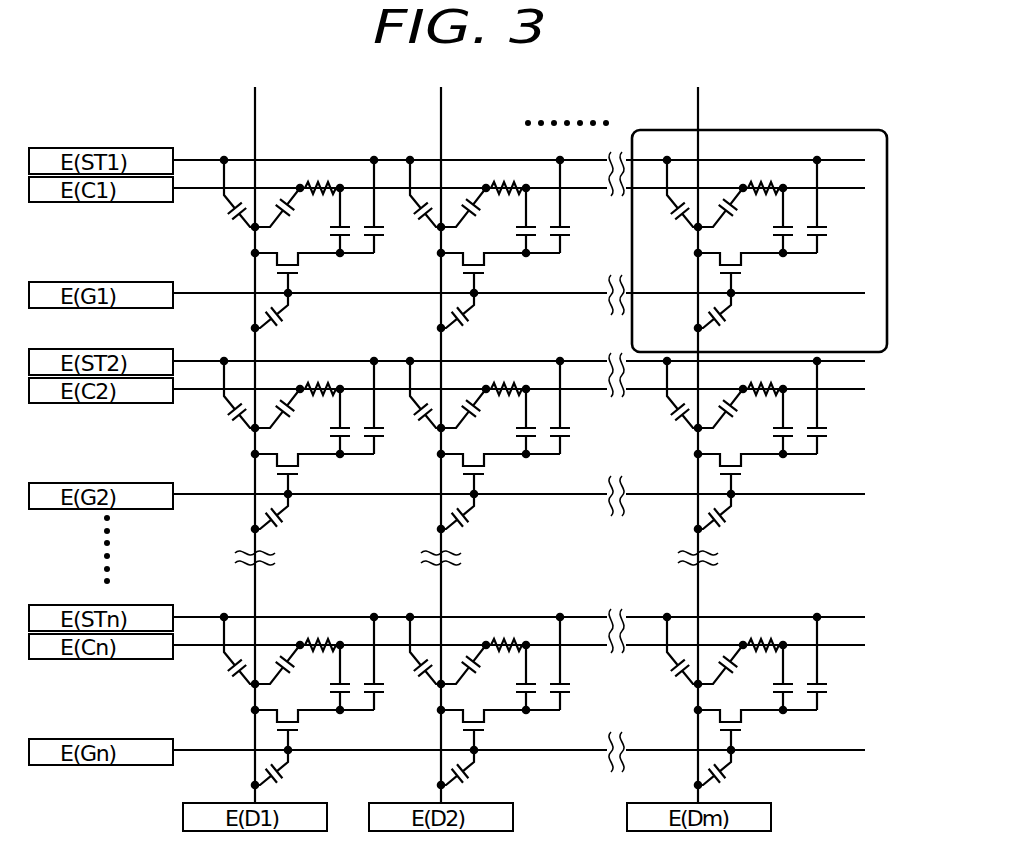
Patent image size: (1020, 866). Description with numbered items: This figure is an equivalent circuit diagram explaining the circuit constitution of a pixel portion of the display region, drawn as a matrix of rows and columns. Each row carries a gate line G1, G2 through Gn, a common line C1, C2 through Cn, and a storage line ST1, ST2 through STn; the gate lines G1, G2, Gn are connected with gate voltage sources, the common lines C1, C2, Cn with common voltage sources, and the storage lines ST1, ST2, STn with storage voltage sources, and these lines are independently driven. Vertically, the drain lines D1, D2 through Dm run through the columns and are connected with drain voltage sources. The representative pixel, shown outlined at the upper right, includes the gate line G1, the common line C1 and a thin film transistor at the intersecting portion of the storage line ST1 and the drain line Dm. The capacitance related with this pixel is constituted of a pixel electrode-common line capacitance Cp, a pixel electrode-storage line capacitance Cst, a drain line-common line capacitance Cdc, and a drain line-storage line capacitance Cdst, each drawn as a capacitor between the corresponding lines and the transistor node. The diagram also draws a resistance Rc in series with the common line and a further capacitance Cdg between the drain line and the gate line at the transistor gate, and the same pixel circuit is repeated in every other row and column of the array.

The drain line D1 is at (256, 131).
The drain line D2 is at (442, 134).
The drain line Dm is at (697, 116).
The storage line ST1 is at (728, 158).
The common line C1 is at (836, 189).
The gate line G1 is at (834, 293).
The storage line ST2 is at (473, 360).
The common line C2 is at (585, 391).
The gate line G2 is at (843, 494).
The storage line STn is at (490, 616).
The common line Cn is at (588, 648).
The gate line Gn is at (839, 752).
The drain line-storage line capacitance Cdst is at (673, 427).
The drain line-common line capacitance Cdc is at (721, 220).
The common line resistance Rc is at (764, 179).
The pixel electrode-common line capacitance Cp is at (770, 222).
The pixel electrode-storage line capacitance Cst is at (833, 205).
The data line to gate line parasitic capacitance Cdg is at (729, 318).